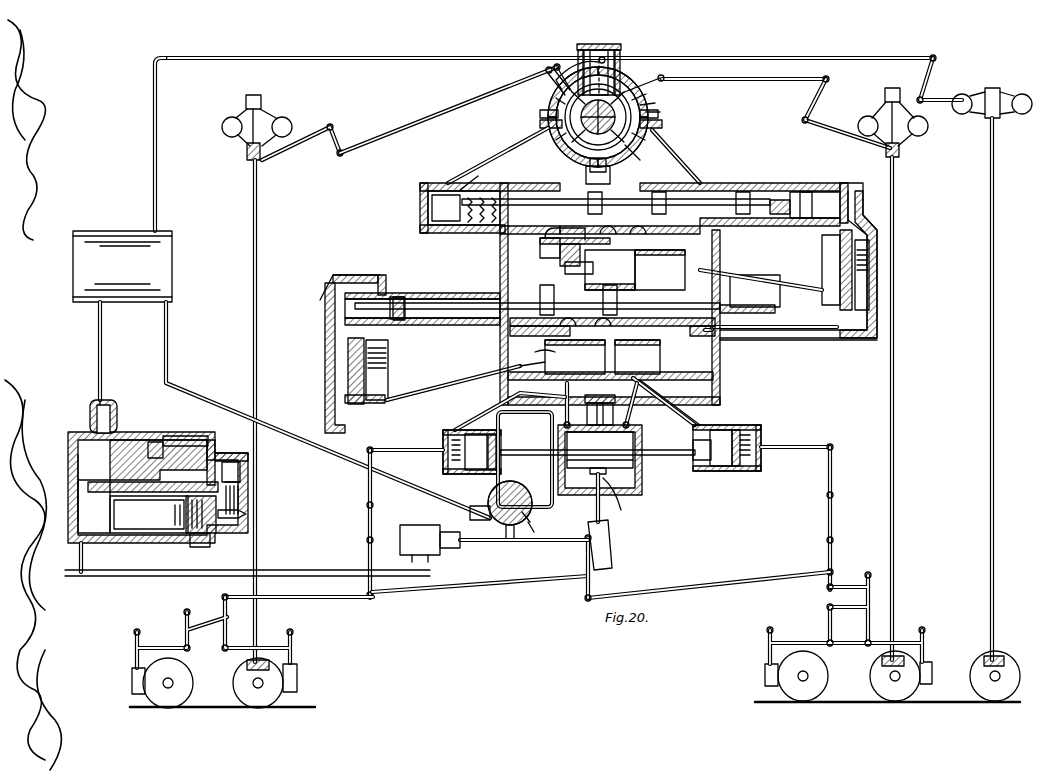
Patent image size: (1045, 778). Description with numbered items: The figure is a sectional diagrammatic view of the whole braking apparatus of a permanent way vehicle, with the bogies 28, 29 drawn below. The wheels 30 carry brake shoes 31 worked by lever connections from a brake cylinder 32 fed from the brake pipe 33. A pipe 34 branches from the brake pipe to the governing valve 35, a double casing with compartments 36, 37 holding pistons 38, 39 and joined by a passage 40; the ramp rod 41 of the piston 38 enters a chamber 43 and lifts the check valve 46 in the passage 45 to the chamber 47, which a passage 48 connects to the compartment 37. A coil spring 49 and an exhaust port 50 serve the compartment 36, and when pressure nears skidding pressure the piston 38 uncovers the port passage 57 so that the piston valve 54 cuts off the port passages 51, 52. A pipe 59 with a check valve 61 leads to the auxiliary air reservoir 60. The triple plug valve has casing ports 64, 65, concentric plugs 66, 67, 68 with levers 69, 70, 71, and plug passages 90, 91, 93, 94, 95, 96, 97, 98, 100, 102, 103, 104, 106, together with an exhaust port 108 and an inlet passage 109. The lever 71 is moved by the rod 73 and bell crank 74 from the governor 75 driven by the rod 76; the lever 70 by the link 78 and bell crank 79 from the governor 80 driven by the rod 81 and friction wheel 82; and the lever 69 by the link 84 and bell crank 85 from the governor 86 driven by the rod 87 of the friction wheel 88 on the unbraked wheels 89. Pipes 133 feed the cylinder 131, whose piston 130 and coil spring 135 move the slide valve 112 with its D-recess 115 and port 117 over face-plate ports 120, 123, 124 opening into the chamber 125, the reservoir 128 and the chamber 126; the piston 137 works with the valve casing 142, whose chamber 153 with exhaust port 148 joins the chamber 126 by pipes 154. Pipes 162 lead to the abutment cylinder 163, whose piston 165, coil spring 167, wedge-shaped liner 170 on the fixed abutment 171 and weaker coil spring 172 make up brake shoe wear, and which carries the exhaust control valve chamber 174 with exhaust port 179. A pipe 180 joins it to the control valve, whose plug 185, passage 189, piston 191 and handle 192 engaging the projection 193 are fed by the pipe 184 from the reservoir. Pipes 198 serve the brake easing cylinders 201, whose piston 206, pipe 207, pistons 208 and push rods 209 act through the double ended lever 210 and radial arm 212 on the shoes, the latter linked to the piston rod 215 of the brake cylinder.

The bogie 28 is at (251, 662).
The bogie 29 is at (887, 650).
The permanent way vehicle wheels 30 is at (232, 683).
The brake shoes 31 is at (132, 680).
The brake cylinder 32 is at (430, 543).
The brake pipe 33 is at (305, 568).
The pipe 34 is at (84, 553).
The governing valve 35 is at (68, 512).
The cylindrical compartment 36 is at (94, 506).
The cylindrical compartment 37 is at (146, 460).
The piston 38 is at (153, 498).
The piston 39 is at (215, 434).
The passage 40 is at (78, 470).
The ramp rod 41 is at (220, 520).
The chamber 43 is at (248, 520).
The passage 45 is at (242, 494).
The check valve 46 is at (240, 482).
The chamber 47 is at (232, 472).
The passage 48 is at (232, 450).
The coil spring 49 is at (170, 514).
The air exhaust port 50 is at (205, 548).
The port passage 51 is at (112, 447).
The port passage 52 is at (190, 436).
The piston valve 54 is at (160, 440).
The port passage 57 is at (143, 490).
The pipe 59 is at (103, 357).
The auxiliary air reservoir 60 is at (122, 266).
The check valve 61 is at (158, 165).
The port 64 is at (598, 50).
The port 65 is at (598, 175).
The plug tap 66 is at (648, 97).
The plug tap 67 is at (568, 158).
The plug tap 68 is at (546, 70).
The lever 69 is at (621, 55).
The lever 70 is at (652, 75).
The lever 71 is at (556, 64).
The rod 73 is at (466, 104).
The bell crank 74 is at (302, 142).
The governor 75 is at (268, 112).
The rod 76 is at (258, 282).
The link 78 is at (764, 84).
The bell crank 79 is at (836, 134).
The governor 80 is at (905, 140).
The rod 81 is at (896, 384).
The friction wheel 82 is at (905, 655).
The link 84 is at (768, 58).
The bell crank 85 is at (928, 80).
The governor 86 is at (992, 86).
The rod 87 is at (990, 325).
The friction wheel 88 is at (984, 655).
The wheels 89 is at (995, 676).
The air port passage 90 is at (560, 90).
The air port passage 91 is at (570, 146).
The port 93 is at (656, 104).
The port 94 is at (598, 115).
The port 95 is at (556, 103).
The port 96 is at (596, 127).
The passage 97 is at (660, 116).
The port passage 98 is at (558, 140).
The recess port 100 is at (662, 126).
The port 102 is at (603, 161).
The zig-zag port passage 103 is at (660, 130).
The zig-zag port passage 104 is at (540, 117).
The port passage 106 is at (646, 142).
The air exhaust port 108 is at (642, 160).
The air inlet passage 109 is at (535, 126).
The slide valve 112 is at (622, 200).
The D-recess 115 is at (665, 220).
The port 117 is at (545, 238).
The port 120 is at (540, 262).
The port 123 is at (626, 312).
The port 124 is at (515, 372).
The chamber 125 is at (565, 272).
The chamber 126 is at (545, 365).
The reservoir 128 is at (590, 312).
The piston 130 is at (484, 166).
The cylinder 131 is at (592, 251).
The pipes 133 is at (478, 168).
The coil spring 135 is at (486, 225).
The piston 137 is at (802, 183).
The valve casing 142 is at (877, 210).
The exhaust port 148 is at (832, 255).
The chamber 153 is at (826, 298).
The pipes 154 is at (798, 286).
The pipes 162 is at (686, 410).
The abutment cylinder 163 is at (642, 478).
The piston 165 is at (600, 450).
The coil spring 167 is at (622, 496).
The wedge-shaped liner 170 is at (612, 540).
The fixed abutment 171 is at (612, 556).
The coil spring 172 is at (621, 512).
The exhaust control valve chamber 174 is at (652, 392).
The exhaust port 179 is at (630, 412).
The pipe 180 is at (548, 430).
The pipe 184 is at (170, 348).
The valve plug 185 is at (488, 486).
The passage 189 is at (470, 518).
The piston 191 is at (515, 540).
The handle 192 is at (532, 520).
The projection 193 is at (536, 530).
The pipes 198 is at (512, 400).
The brake easing cylinders 201 is at (474, 432).
The piston 206 is at (697, 462).
The pipe 207 is at (520, 455).
The pistons 208 is at (448, 430).
The piston push rods 209 is at (420, 448).
The double ended lever 210 is at (373, 490).
The radial arm 212 is at (368, 556).
The piston rod 215 is at (480, 542).